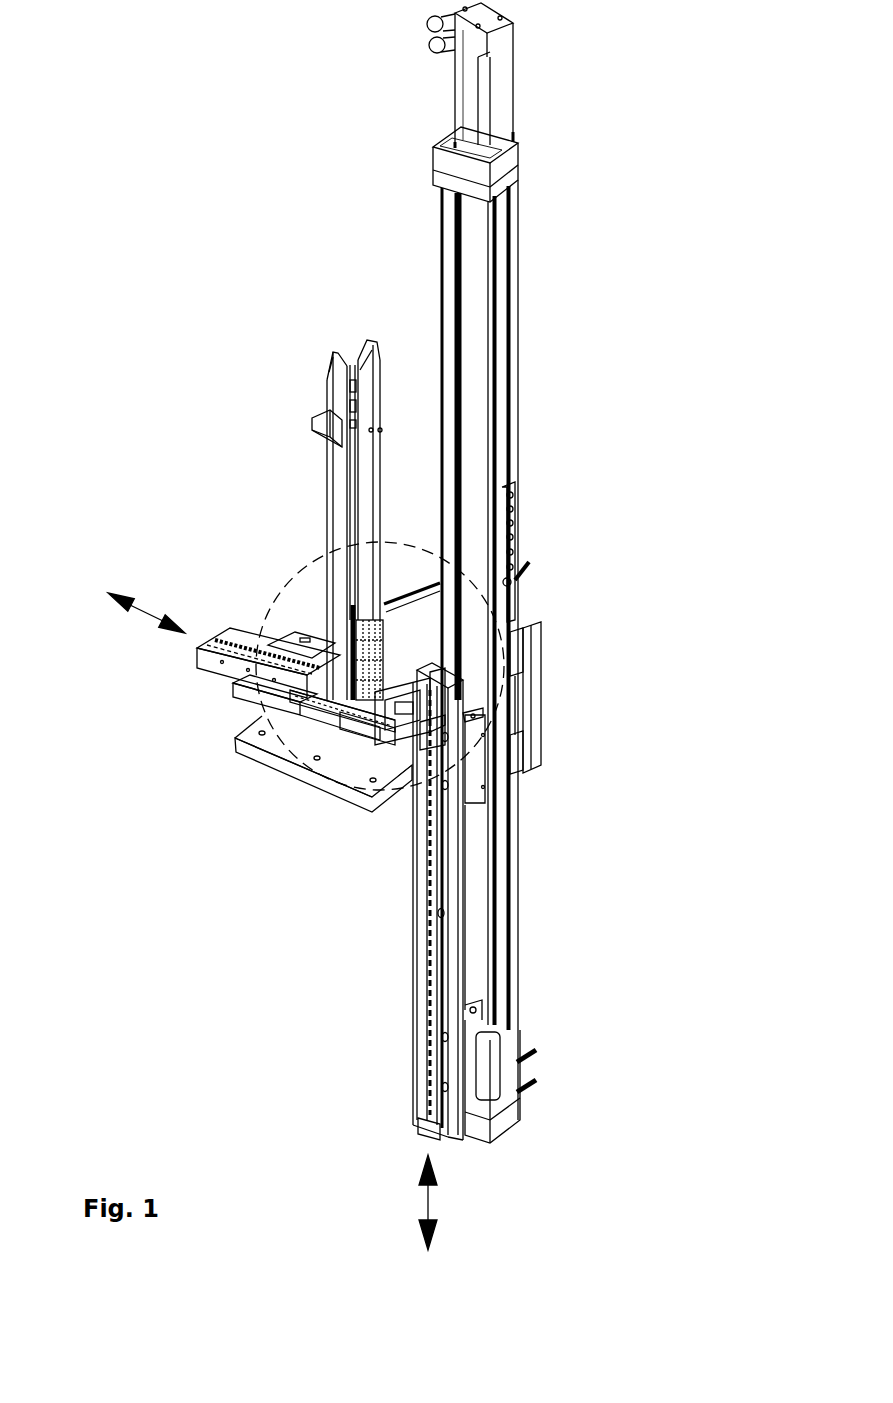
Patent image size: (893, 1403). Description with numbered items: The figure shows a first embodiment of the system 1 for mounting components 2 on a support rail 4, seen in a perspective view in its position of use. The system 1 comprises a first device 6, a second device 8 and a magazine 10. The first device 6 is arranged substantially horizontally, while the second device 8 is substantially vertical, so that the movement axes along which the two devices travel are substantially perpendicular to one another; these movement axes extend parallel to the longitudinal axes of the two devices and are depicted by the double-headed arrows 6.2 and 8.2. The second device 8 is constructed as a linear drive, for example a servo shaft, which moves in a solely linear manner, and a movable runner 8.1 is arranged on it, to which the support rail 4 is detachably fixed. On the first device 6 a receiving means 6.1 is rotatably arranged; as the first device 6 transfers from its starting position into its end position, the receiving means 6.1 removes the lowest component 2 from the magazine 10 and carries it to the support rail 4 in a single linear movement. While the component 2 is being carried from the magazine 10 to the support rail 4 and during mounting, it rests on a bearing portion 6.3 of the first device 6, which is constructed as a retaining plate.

The system 1 is at (190, 125).
The component 2 is at (352, 620).
The support rail 4 is at (433, 809).
The first device 6 is at (260, 645).
The receiving means 6.1 is at (327, 722).
The double-headed arrow 6.2 is at (146, 617).
The bearing portion 6.3 is at (322, 737).
The second device 8 is at (478, 299).
The movable runner 8.1 is at (417, 1047).
The double-headed arrow 8.2 is at (428, 1202).
The magazine 10 is at (345, 486).